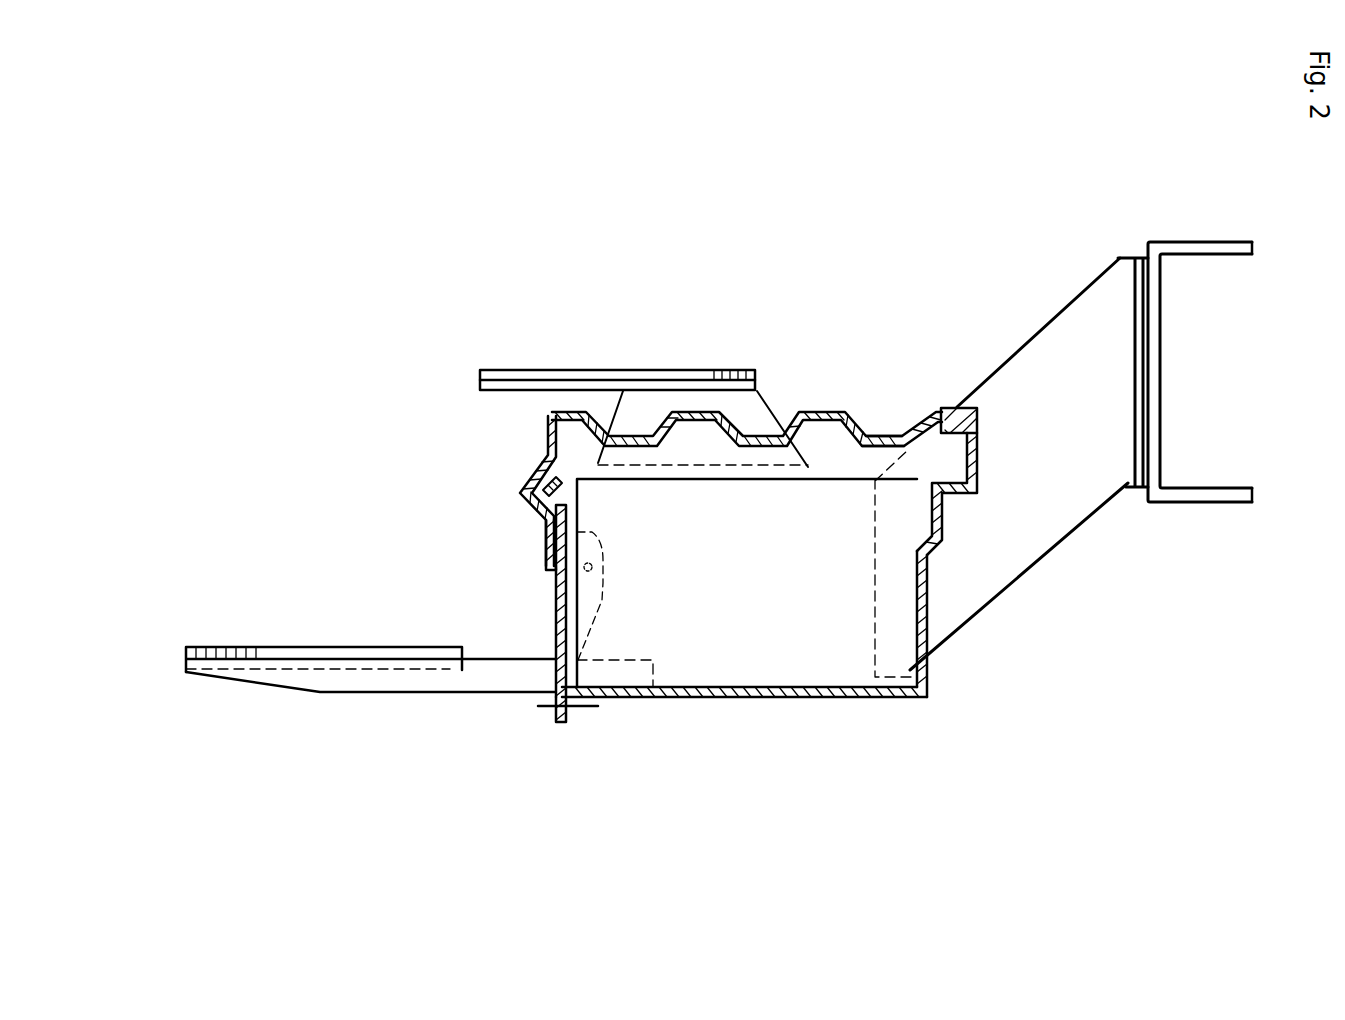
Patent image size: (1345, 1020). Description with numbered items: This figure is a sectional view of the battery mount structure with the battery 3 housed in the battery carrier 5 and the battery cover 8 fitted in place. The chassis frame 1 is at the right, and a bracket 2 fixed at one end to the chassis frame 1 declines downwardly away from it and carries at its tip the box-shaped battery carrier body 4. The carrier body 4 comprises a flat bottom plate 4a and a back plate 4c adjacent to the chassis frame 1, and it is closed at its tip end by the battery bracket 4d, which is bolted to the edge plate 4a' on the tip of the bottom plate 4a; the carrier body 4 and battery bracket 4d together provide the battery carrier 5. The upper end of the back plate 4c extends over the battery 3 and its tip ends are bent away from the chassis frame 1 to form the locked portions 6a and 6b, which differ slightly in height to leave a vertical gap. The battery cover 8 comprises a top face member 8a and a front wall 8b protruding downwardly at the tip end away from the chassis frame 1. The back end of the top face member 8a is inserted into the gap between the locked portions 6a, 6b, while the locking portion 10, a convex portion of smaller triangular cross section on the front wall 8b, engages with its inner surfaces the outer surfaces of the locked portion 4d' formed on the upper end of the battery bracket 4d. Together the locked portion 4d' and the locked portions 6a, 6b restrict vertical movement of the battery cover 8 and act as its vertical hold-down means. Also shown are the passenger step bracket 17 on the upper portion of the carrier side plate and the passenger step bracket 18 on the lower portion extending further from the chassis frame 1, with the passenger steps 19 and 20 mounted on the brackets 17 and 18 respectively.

The chassis frame 1 is at (1220, 240).
The bracket 2 is at (1047, 533).
The battery 3 is at (775, 590).
The battery carrier body 4 is at (724, 712).
The bottom plate 4a is at (744, 743).
The edge plate 4a' is at (593, 757).
The back plate 4c is at (927, 615).
The battery bracket 4d is at (509, 557).
The locked portion 4d' is at (623, 596).
The battery carrier 5 is at (793, 742).
The locked portion 6a is at (977, 442).
The locked portion 6b is at (948, 408).
The battery cover 8 is at (826, 396).
The top face member 8a is at (870, 433).
The front wall 8b is at (547, 440).
The locking portion 10 is at (521, 498).
The passenger step bracket 17 is at (712, 402).
The passenger step bracket 18 is at (365, 688).
The passenger step 19 is at (643, 372).
The passenger step 20 is at (277, 645).